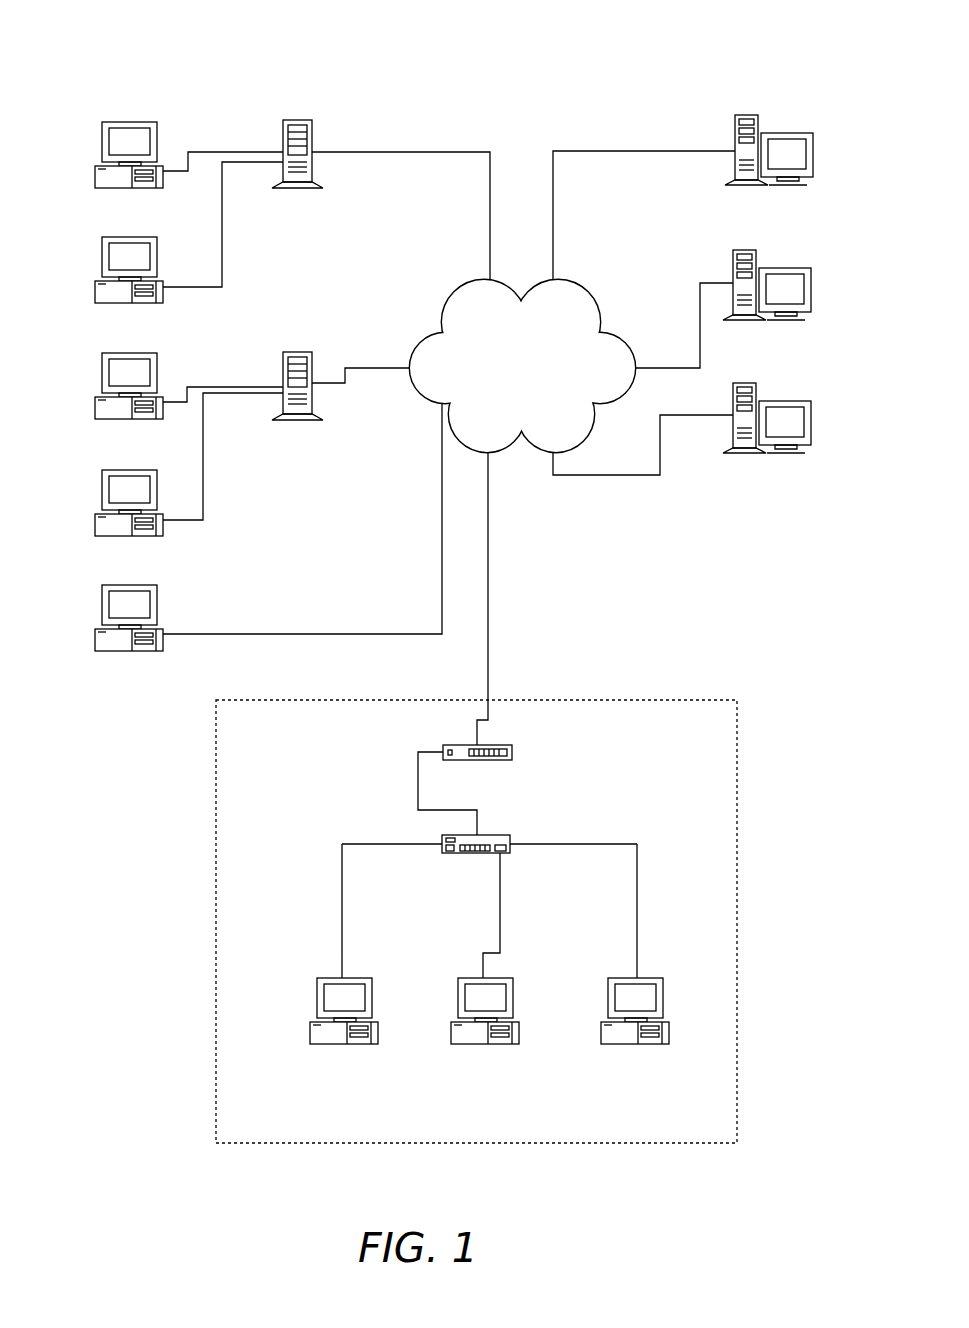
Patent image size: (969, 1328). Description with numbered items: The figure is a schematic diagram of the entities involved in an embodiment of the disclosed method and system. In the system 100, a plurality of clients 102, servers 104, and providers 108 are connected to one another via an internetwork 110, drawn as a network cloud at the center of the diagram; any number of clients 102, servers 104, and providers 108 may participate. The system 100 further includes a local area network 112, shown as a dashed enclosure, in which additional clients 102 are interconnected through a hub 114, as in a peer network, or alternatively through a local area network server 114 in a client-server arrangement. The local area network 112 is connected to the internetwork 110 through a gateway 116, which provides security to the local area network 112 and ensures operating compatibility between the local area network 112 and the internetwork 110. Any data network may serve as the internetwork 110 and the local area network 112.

The system 100 is at (120, 52).
The client 102 is at (353, 593).
The server 104 is at (802, 295).
The provider 108 is at (310, 268).
The internetwork 110 is at (569, 409).
The local area network 112 is at (737, 810).
The hub 114 is at (507, 843).
The gateway 116 is at (505, 757).